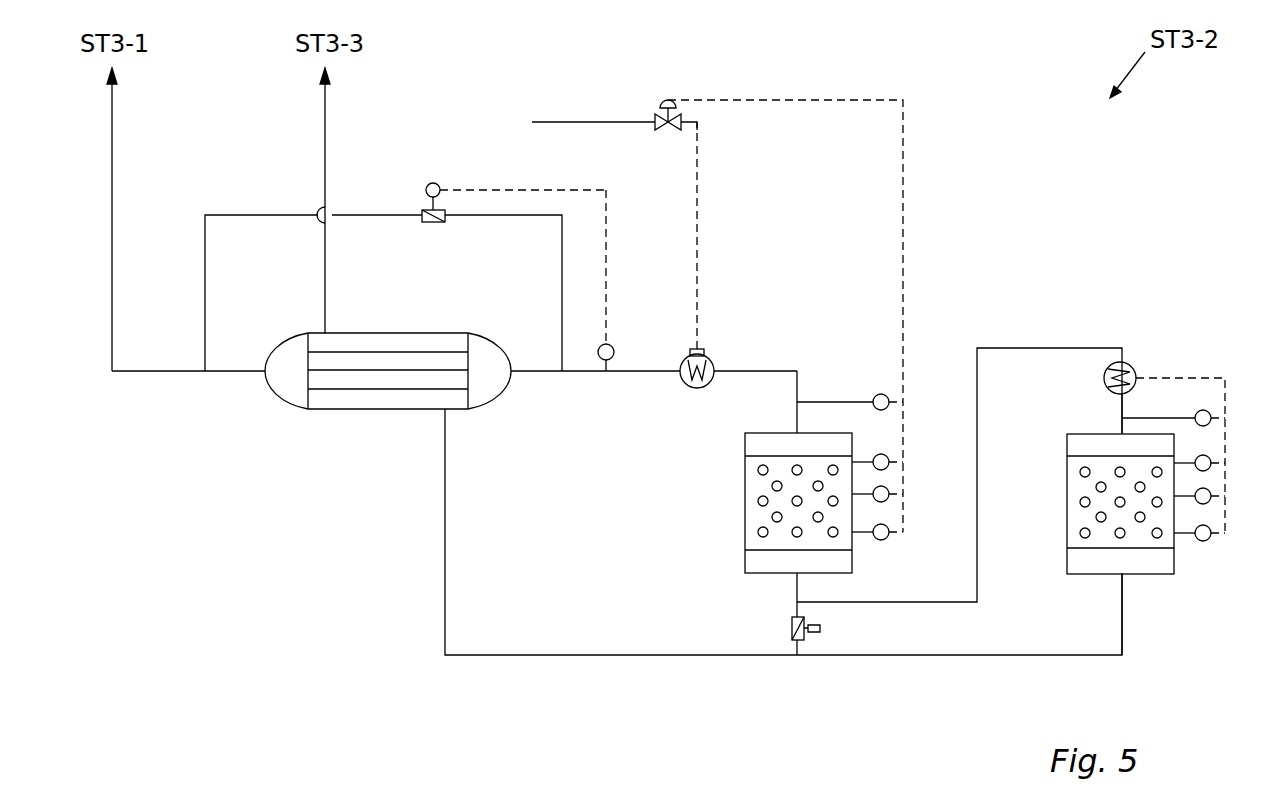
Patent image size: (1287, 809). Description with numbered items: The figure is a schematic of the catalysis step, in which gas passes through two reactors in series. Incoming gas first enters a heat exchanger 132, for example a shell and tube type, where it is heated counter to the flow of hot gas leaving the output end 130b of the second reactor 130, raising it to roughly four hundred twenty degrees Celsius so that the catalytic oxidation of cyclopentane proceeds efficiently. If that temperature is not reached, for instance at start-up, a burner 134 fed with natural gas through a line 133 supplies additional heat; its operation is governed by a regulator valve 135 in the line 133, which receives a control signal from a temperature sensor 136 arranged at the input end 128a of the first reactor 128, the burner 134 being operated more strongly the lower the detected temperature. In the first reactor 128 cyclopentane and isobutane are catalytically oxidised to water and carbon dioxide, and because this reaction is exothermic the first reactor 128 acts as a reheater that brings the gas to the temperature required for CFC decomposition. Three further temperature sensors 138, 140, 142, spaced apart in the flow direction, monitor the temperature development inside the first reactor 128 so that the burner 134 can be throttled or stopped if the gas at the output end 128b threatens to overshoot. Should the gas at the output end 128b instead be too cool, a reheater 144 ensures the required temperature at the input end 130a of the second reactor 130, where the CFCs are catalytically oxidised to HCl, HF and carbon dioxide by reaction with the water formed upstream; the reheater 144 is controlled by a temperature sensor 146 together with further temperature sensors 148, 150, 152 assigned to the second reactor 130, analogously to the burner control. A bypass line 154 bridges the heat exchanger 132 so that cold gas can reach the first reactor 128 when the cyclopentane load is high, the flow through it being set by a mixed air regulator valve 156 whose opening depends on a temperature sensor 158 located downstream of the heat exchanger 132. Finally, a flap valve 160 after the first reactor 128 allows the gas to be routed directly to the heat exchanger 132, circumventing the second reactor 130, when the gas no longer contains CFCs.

The first reactor 128 is at (755, 488).
The input end of the first reactor 128a is at (795, 427).
The output end of the first reactor 128b is at (790, 578).
The second reactor 130 is at (1068, 516).
The input end of the second reactor 130a is at (1118, 430).
The output end of the second reactor 130b is at (1120, 580).
The heat exchanger 132 is at (283, 410).
The line 133 is at (583, 130).
The burner 134 is at (707, 362).
The regulator valve 135 is at (664, 104).
The temperature sensor 136 is at (878, 393).
The temperature sensor 138 is at (890, 462).
The temperature sensor 140 is at (890, 494).
The temperature sensor 142 is at (890, 532).
The reheater 144 is at (1128, 362).
The temperature sensor 146 is at (1212, 418).
The temperature sensor 148 is at (1212, 465).
The temperature sensor 150 is at (1212, 497).
The temperature sensor 152 is at (1212, 533).
The bypass line 154 is at (215, 214).
The mixed air regulator valve 156 is at (425, 224).
The temperature sensor 158 is at (612, 346).
The flap valve 160 is at (797, 643).